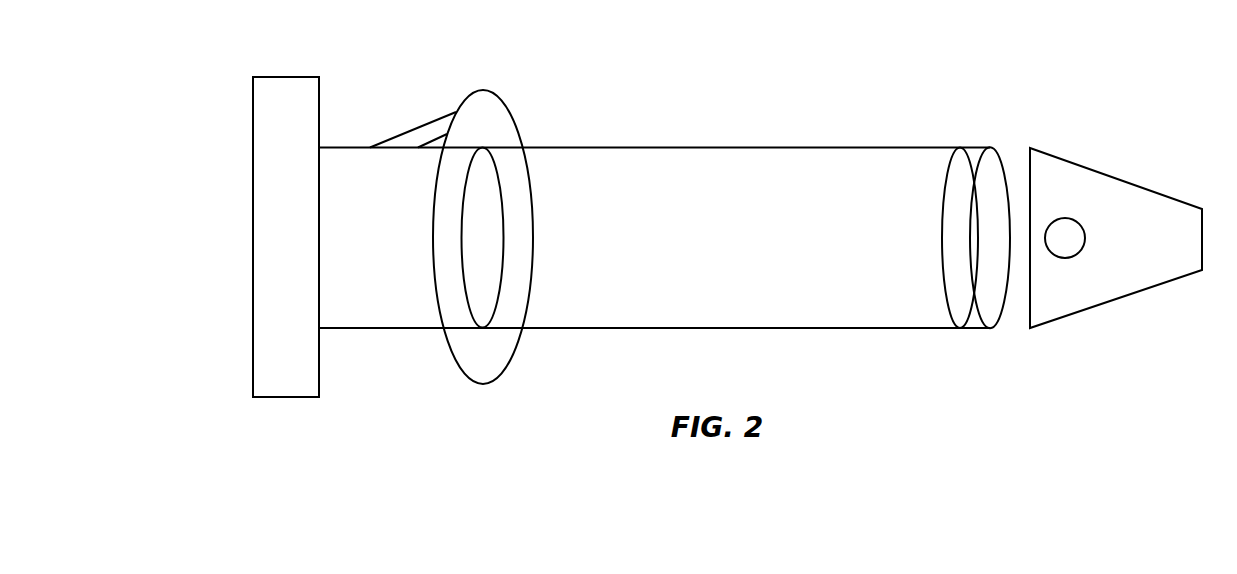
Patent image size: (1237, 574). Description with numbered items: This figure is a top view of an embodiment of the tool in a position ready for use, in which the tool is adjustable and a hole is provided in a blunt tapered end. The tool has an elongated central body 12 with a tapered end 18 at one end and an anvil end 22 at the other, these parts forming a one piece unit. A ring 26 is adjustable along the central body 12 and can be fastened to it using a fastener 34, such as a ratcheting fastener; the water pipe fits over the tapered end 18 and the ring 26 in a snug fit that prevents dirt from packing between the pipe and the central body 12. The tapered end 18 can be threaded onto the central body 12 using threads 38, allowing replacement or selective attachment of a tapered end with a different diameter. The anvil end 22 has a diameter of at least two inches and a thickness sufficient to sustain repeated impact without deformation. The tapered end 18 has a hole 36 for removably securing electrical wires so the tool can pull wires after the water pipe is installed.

The central body 12 is at (770, 147).
The tapered end 18 is at (1120, 177).
The anvil end 22 is at (250, 237).
The ring 26 is at (498, 123).
The fastener 34 is at (428, 122).
The hole 36 is at (1065, 238).
The threads 38 is at (987, 175).